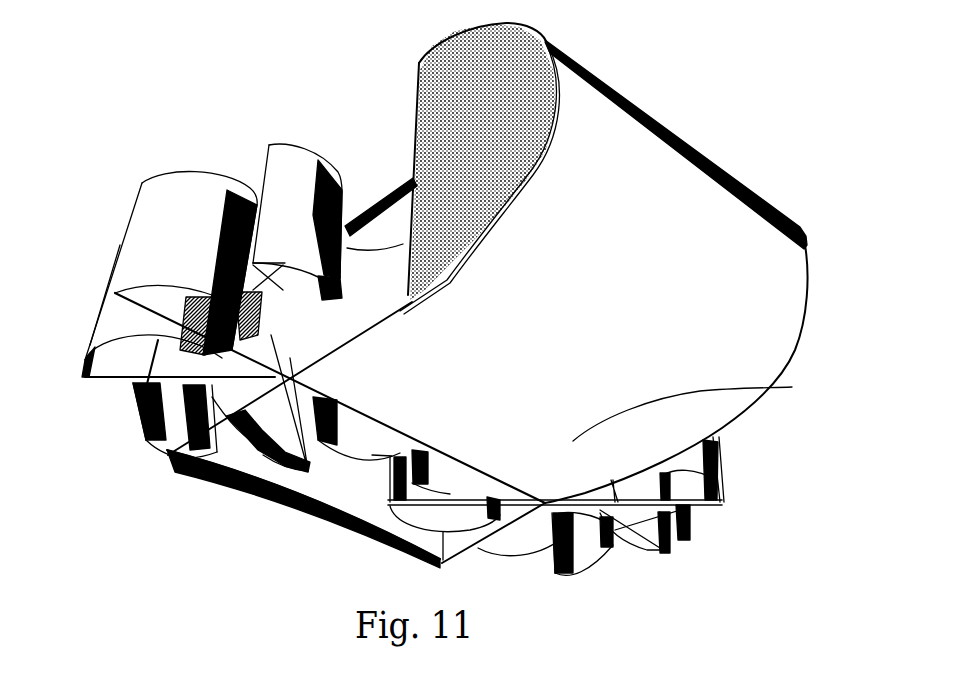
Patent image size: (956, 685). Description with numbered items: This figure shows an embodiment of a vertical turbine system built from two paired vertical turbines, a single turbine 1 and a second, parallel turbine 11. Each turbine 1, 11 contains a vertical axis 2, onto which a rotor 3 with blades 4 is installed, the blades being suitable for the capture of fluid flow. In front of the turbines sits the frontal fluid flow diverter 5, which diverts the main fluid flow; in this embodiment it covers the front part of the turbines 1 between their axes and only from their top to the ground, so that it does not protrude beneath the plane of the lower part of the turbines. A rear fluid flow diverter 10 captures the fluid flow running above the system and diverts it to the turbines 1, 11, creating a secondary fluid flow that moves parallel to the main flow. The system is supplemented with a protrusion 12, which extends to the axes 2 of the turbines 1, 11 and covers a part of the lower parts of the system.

The turbine 1 is at (700, 527).
The vertical axis 2 is at (137, 427).
The rotor 3 is at (702, 506).
The blades 4 is at (216, 195).
The frontal fluid flow diverter 5 is at (270, 523).
The rear fluid flow diverter 10 is at (656, 131).
The second parallel turbine 11 is at (198, 164).
The protrusion 12 is at (765, 388).